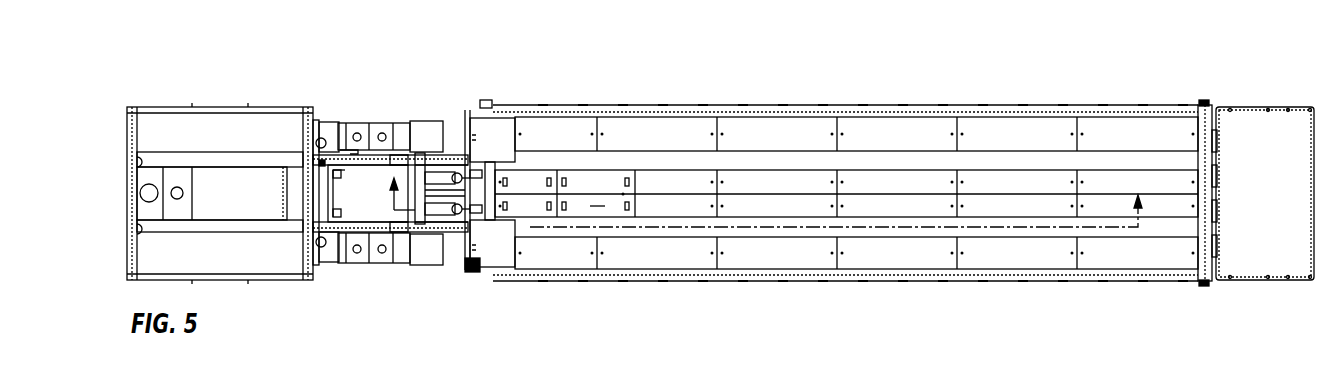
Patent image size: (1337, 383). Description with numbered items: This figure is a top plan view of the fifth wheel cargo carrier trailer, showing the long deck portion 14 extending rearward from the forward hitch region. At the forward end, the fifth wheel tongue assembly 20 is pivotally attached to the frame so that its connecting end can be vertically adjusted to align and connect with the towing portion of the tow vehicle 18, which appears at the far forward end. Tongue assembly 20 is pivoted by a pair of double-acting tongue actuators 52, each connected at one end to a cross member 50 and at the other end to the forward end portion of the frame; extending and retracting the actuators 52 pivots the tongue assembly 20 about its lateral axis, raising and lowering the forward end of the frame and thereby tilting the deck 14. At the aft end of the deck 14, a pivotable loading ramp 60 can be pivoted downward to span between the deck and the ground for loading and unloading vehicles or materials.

The deck portion 14 is at (794, 284).
The tow vehicle 18 is at (269, 90).
The fifth wheel tongue assembly 20 is at (397, 92).
The cross member 50 is at (413, 177).
The tongue actuators 52 is at (448, 174).
The loading ramp 60 is at (1262, 283).